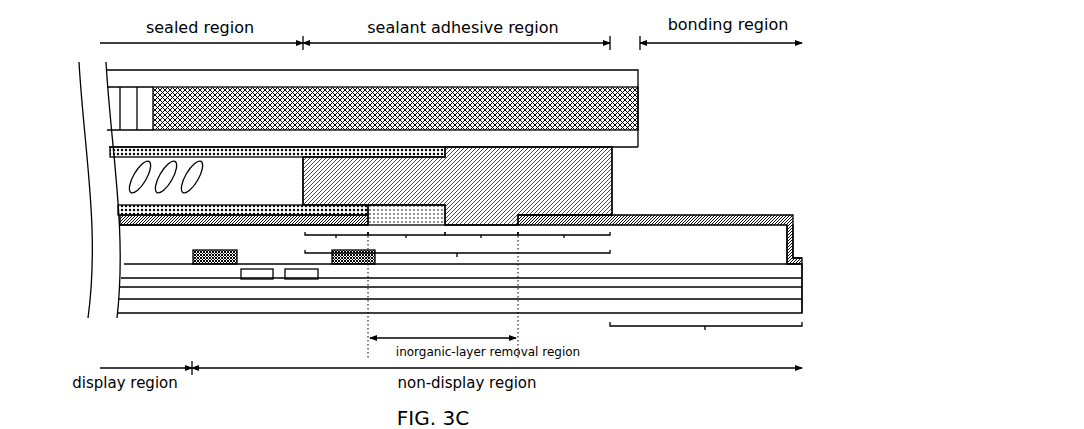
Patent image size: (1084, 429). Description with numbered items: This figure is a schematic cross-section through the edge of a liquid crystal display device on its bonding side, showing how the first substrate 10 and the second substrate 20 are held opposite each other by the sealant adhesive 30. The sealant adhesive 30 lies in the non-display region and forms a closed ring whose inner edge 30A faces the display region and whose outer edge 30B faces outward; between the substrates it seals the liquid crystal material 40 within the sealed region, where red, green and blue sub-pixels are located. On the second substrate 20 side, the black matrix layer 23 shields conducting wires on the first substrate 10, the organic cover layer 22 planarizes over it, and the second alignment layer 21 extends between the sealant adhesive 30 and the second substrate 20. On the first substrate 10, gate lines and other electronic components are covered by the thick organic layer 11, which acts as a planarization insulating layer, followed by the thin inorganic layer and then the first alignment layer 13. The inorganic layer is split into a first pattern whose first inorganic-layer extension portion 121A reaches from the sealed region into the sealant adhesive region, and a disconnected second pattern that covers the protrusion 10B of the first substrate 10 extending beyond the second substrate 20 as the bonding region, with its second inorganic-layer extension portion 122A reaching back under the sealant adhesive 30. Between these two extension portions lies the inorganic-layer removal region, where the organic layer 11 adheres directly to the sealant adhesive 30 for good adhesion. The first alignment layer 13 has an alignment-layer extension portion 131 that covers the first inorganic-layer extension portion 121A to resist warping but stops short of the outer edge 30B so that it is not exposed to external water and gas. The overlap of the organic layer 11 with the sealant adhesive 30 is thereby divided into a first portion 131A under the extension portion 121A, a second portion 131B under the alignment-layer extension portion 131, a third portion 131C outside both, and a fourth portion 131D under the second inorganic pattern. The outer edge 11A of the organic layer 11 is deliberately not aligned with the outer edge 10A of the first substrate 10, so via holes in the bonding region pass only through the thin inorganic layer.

The second substrate 20 is at (610, 80).
The black matrix layer 23 is at (620, 107).
The organic cover layer 22 is at (620, 138).
The second alignment layer 21 is at (110, 150).
The liquid crystal material 40 is at (130, 176).
The first alignment layer 13 is at (118, 209).
The organic layer 11 is at (135, 252).
The first substrate 10 is at (282, 306).
The outer edge of the first substrate 10A is at (804, 302).
The protrusion 10B is at (706, 338).
The outer edge of the organic layer 11A is at (796, 243).
The first inorganic-layer extension portion 121A is at (345, 215).
The second inorganic-layer extension portion 122A is at (575, 216).
The sealant adhesive 30 is at (587, 162).
The inner edge of the sealant adhesive 30A is at (303, 157).
The outer edge of the sealant adhesive 30B is at (612, 173).
The alignment-layer extension portion 131 is at (447, 213).
The first portion of the organic-layer overlap portion 131A is at (336, 240).
The second portion of the organic-layer overlap portion 131B is at (406, 240).
The third portion of the organic-layer overlap portion 131C is at (481, 240).
The fourth portion of the organic-layer overlap portion 131D is at (564, 240).